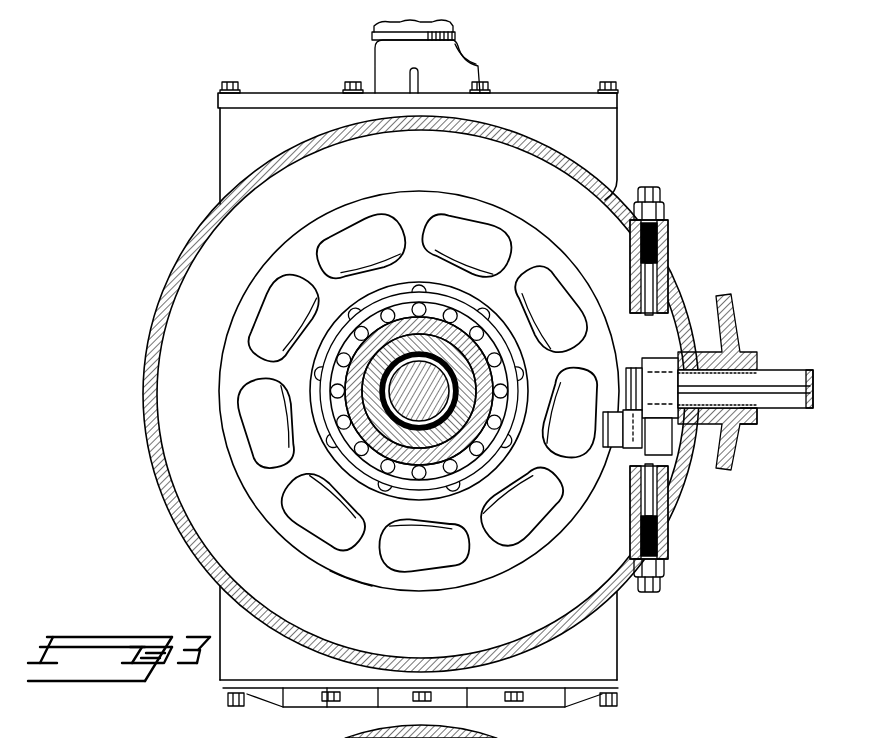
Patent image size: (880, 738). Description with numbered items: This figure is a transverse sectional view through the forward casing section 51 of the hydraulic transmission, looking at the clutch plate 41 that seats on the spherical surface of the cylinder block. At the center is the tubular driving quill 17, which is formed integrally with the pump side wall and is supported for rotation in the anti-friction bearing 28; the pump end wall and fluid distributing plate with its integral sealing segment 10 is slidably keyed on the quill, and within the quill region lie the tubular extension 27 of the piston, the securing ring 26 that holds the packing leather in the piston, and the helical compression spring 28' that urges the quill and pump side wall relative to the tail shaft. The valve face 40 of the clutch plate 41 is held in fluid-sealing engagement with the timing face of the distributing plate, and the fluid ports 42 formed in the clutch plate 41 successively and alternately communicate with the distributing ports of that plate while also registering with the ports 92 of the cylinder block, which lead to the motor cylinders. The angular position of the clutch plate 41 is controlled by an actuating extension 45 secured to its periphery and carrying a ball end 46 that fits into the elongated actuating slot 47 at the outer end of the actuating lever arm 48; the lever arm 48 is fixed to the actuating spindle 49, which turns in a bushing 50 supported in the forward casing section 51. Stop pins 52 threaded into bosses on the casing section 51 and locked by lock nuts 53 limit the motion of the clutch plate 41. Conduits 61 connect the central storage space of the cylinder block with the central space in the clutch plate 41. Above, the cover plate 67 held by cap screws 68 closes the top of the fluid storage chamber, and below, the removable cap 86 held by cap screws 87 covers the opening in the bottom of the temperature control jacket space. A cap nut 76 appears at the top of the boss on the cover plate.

The sealing segment 10 is at (321, 378).
The tubular driving quill section 17 is at (470, 366).
The securing ring 26 is at (500, 380).
The tubular extension 27 is at (497, 452).
The anti-friction bearing 28 is at (411, 389).
The helical compression spring 28' is at (381, 501).
The valve face 40 is at (223, 386).
The clutch plate 41 is at (352, 590).
The fluid ports 42 is at (262, 432).
The actuating extension 45 is at (602, 460).
The ball end 46 is at (628, 460).
The actuating slot 47 is at (722, 340).
The actuating lever arm 48 is at (654, 364).
The actuating spindle 49 is at (770, 372).
The bushing 50 is at (757, 422).
The forward casing section 51 is at (172, 262).
The stop pins 52 is at (668, 289).
The lock nuts 53 is at (666, 207).
The conduits 61 is at (487, 313).
The cover plate 67 is at (376, 60).
The cap screws 68 is at (348, 88).
The cap nut 76 is at (386, 32).
The removable cap 86 is at (364, 707).
The cap screws 87 is at (246, 705).
The ports 92 is at (344, 268).